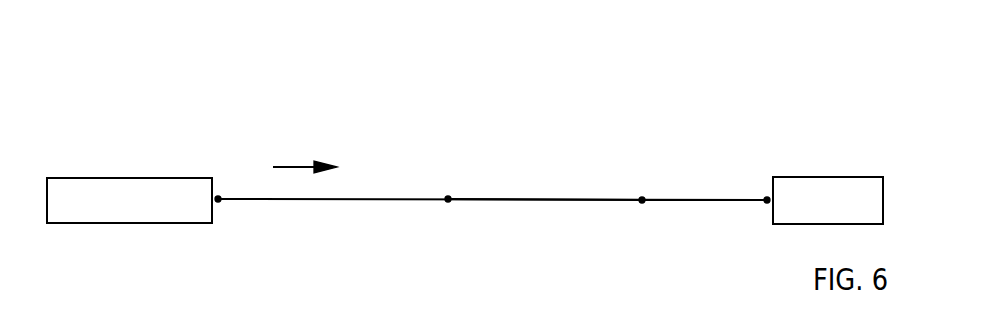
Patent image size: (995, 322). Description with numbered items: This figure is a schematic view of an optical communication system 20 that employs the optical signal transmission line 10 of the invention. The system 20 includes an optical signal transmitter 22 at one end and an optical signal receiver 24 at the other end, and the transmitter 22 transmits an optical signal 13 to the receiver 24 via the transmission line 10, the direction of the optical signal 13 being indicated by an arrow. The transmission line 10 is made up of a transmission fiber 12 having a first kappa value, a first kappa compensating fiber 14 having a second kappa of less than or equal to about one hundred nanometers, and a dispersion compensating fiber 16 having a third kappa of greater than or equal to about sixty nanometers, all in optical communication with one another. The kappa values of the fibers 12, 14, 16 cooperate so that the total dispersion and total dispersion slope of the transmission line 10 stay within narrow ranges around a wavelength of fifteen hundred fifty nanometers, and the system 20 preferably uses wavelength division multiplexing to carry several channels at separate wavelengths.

The optical signal transmission line 10 is at (513, 170).
The transmission fiber 12 is at (221, 196).
The optical signal 13 is at (302, 165).
The first kappa compensating fiber 14 is at (551, 197).
The dispersion compensating fiber 16 is at (684, 198).
The optical communication system 20 is at (707, 88).
The optical signal transmitter 22 is at (127, 178).
The optical signal receiver 24 is at (842, 177).